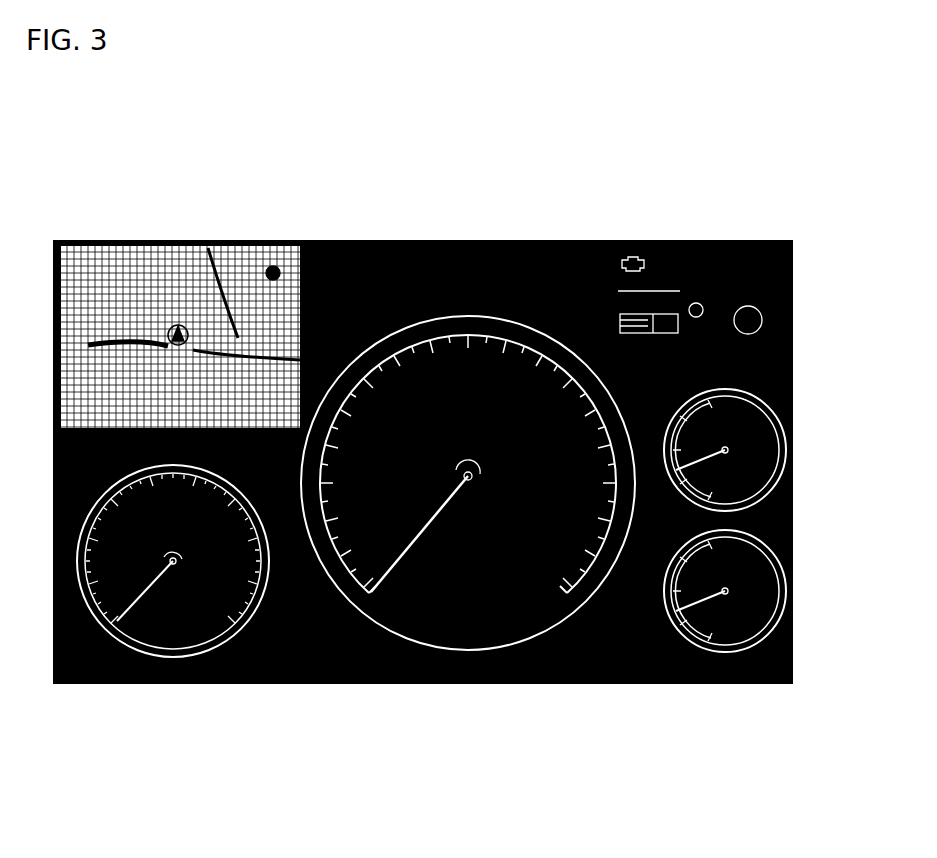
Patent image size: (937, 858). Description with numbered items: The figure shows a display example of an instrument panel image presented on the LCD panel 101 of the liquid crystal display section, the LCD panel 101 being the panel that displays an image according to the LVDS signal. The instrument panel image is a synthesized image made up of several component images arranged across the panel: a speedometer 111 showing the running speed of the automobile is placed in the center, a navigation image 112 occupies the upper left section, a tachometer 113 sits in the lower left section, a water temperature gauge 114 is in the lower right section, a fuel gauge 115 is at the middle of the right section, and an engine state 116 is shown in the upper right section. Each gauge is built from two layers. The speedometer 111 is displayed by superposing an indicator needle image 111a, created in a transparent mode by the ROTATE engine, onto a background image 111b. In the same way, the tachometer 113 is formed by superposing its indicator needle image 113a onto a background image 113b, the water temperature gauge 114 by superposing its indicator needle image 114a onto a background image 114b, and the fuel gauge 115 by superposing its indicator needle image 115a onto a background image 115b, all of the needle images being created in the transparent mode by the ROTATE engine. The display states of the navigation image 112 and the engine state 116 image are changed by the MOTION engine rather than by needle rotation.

The LCD panel 101 is at (440, 275).
The speedometer 111 is at (469, 634).
The indicator needle image 111a is at (397, 552).
The background image 111b is at (603, 548).
The navigation image 112 is at (117, 272).
The tachometer 113 is at (205, 630).
The indicator needle image 113a is at (137, 588).
The background image 113b is at (73, 554).
The water temperature gauge 114 is at (762, 572).
The indicator needle image 114a is at (712, 588).
The background image 114b is at (683, 544).
The fuel gauge 115 is at (762, 432).
The indicator needle image 115a is at (712, 446).
The background image 115b is at (683, 402).
The engine state 116 is at (740, 275).